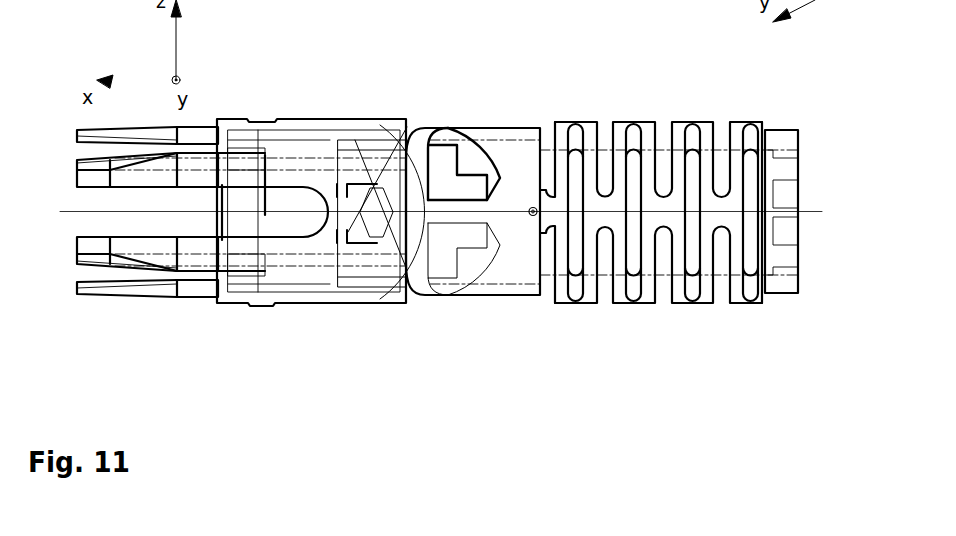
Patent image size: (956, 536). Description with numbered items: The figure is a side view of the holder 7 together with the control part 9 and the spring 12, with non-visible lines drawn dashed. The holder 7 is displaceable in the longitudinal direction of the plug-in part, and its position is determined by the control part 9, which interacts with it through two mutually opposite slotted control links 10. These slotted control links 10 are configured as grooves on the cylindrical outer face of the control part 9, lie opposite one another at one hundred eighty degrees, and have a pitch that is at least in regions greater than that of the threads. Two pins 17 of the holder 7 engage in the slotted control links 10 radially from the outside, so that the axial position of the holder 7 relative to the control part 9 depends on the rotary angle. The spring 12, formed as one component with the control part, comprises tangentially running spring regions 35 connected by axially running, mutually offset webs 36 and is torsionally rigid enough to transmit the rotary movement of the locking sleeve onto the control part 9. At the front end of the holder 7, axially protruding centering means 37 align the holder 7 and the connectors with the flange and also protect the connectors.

The holder 7 is at (311, 282).
The control part 9 is at (487, 286).
The slotted control links 10 is at (463, 286).
The spring 12 is at (651, 283).
The pins 17 is at (381, 285).
The spring regions 35 is at (736, 257).
The webs 36 is at (727, 284).
The centering means 37 is at (155, 286).